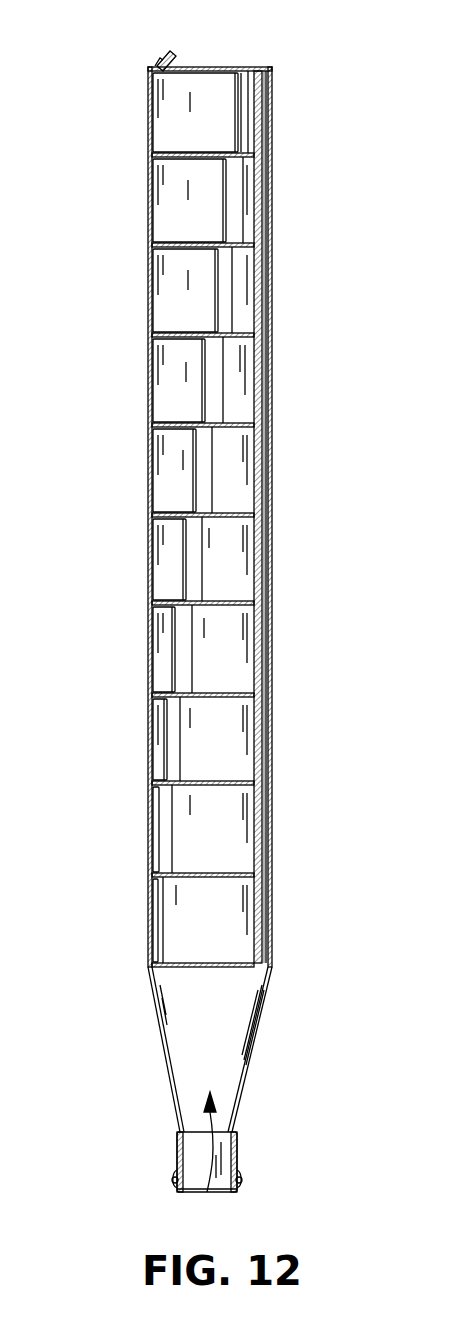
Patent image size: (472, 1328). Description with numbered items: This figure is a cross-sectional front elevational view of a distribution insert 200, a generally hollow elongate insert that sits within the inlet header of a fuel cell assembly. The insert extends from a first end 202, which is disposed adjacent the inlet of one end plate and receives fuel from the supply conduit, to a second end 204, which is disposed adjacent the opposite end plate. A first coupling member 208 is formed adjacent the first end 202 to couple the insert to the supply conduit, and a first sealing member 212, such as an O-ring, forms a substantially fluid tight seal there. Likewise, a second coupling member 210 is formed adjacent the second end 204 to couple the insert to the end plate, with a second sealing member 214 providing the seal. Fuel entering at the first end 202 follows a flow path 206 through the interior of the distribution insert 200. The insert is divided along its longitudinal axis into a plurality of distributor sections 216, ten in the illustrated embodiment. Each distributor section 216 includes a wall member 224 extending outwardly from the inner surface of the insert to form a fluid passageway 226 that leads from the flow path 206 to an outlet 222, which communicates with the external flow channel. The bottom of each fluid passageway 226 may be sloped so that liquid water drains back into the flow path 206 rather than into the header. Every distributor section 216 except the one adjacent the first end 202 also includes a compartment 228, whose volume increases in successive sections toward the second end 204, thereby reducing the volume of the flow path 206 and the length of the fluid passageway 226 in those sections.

The distribution insert 200 is at (95, 183).
The first end 202 is at (234, 1172).
The second end 204 is at (229, 67).
The flow path 206 is at (207, 1193).
The first coupling member 208 is at (240, 1190).
The second coupling member 210 is at (166, 53).
The first sealing member 212 is at (172, 1180).
The second sealing member 214 is at (156, 62).
The distributor section 216 is at (151, 827).
The outlet 222 is at (263, 279).
The wall member 224 is at (246, 324).
The fluid passageway 226 is at (226, 315).
The compartment 228 is at (163, 273).